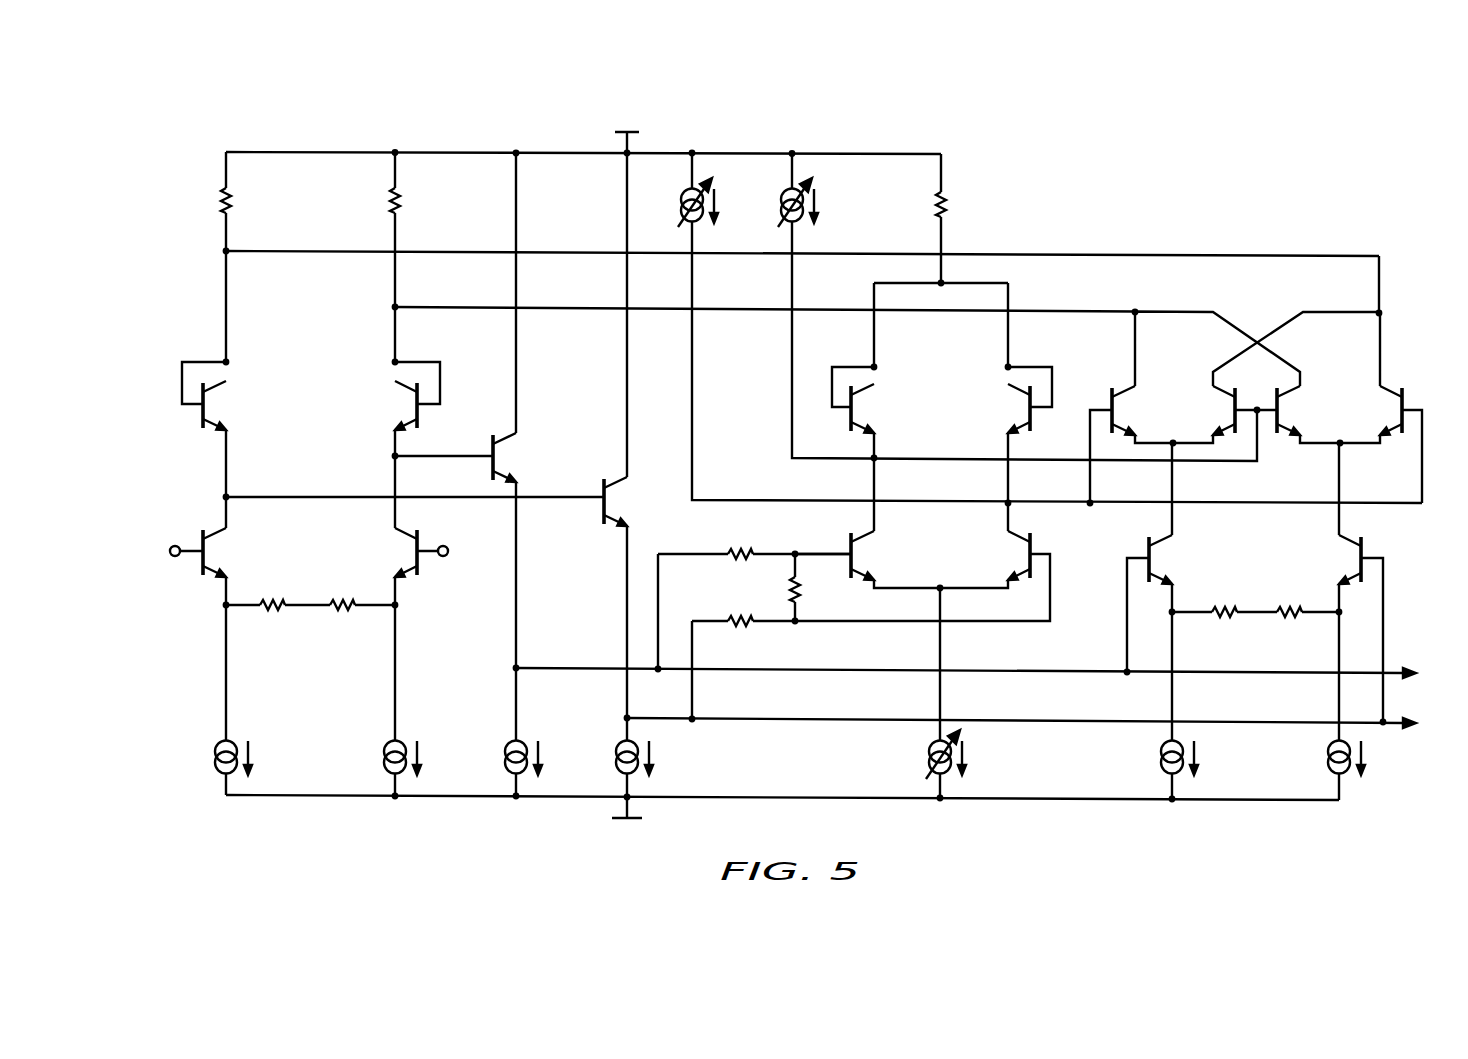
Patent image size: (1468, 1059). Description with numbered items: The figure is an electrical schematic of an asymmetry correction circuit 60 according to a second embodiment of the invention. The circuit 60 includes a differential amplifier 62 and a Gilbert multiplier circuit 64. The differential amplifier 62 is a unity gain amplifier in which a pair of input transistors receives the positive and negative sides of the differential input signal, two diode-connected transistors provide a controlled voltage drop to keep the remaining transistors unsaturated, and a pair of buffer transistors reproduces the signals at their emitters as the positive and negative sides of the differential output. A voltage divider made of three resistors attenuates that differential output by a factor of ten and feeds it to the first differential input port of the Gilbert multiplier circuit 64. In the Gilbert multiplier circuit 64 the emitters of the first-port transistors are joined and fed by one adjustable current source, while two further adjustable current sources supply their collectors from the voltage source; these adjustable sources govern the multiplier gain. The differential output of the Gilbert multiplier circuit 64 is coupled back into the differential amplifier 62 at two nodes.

The asymmetry correction circuit 60 is at (1109, 147).
The differential amplifier 62 is at (328, 410).
The Gilbert multiplier circuit 64 is at (957, 408).